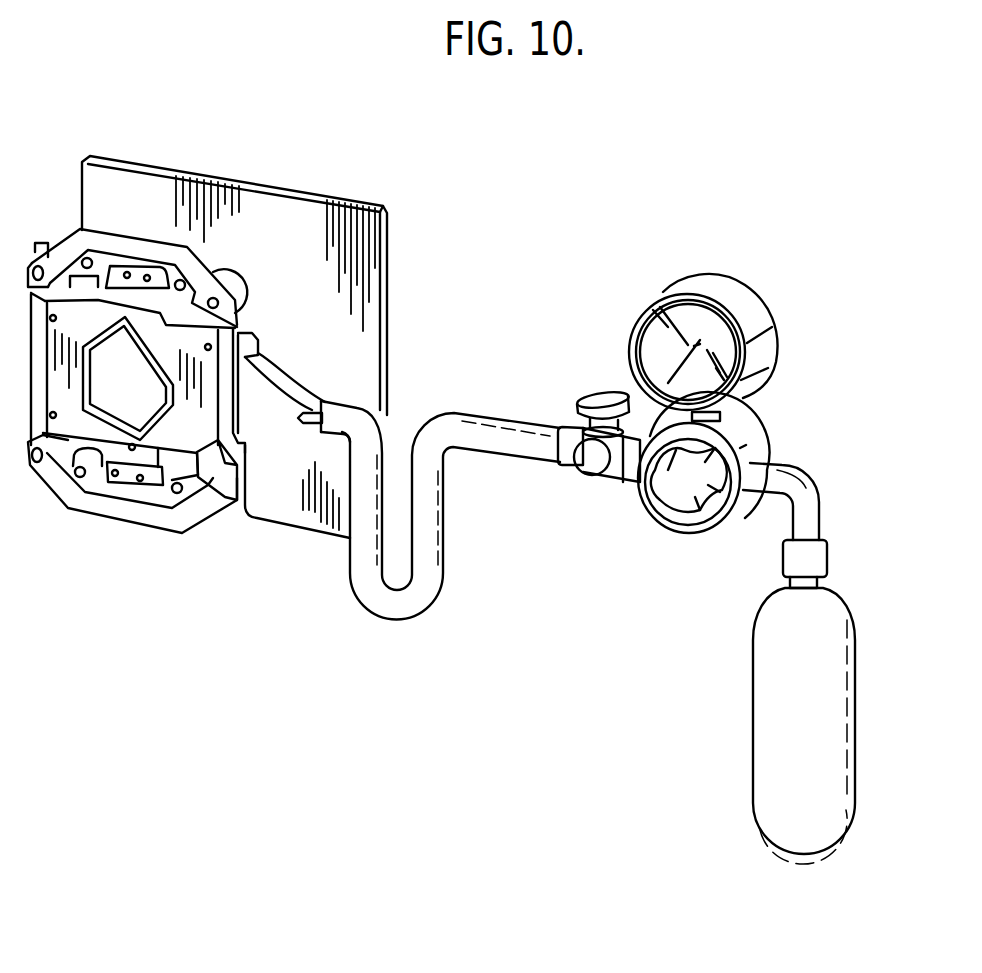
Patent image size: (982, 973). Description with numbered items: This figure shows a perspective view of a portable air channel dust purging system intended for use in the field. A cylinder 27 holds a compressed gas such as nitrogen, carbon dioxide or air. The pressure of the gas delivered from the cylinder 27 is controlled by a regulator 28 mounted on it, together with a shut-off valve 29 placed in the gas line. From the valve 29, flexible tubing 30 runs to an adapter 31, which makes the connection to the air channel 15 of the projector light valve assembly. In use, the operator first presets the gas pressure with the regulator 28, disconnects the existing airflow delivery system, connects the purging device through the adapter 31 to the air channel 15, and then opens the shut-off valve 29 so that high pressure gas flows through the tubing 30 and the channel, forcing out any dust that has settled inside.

The air channel 15 is at (75, 405).
The cylinder 27 is at (777, 733).
The regulator 28 is at (735, 288).
The shut-off valve 29 is at (600, 390).
The flexible tubing 30 is at (372, 585).
The adapter 31 is at (268, 413).